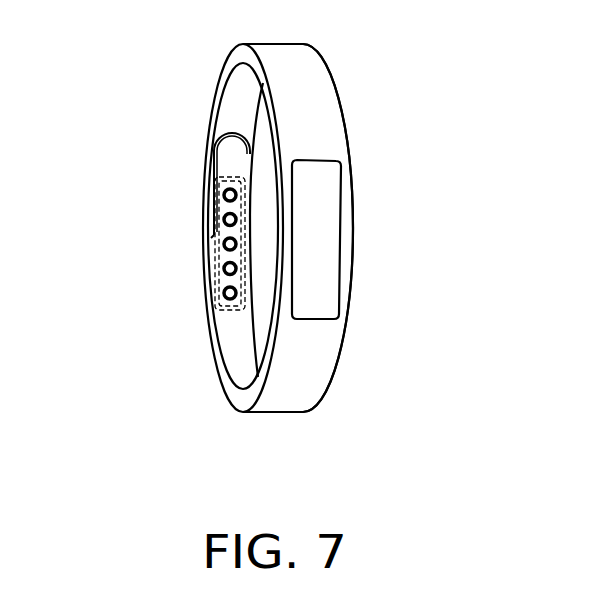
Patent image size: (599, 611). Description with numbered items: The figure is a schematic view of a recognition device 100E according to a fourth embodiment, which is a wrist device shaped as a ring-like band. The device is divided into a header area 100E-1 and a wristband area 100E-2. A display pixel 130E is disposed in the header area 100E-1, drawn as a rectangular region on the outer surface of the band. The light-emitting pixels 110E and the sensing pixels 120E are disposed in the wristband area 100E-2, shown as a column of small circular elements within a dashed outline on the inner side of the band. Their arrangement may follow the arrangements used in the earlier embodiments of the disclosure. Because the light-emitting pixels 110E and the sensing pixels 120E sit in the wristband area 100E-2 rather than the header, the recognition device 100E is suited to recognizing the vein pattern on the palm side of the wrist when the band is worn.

The recognition device 100E is at (525, 483).
The header area 100E-1 is at (342, 182).
The wristband area 100E-2 is at (320, 380).
The display pixel 130E is at (320, 247).
The light-emitting pixel 110E is at (205, 194).
The sensing pixel 120E is at (205, 197).